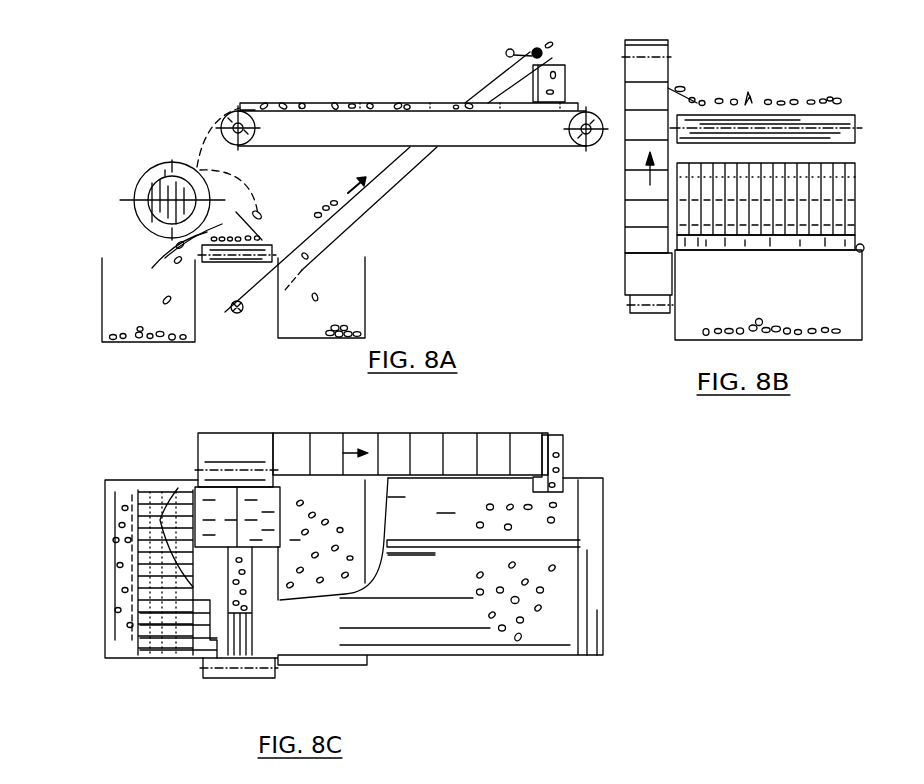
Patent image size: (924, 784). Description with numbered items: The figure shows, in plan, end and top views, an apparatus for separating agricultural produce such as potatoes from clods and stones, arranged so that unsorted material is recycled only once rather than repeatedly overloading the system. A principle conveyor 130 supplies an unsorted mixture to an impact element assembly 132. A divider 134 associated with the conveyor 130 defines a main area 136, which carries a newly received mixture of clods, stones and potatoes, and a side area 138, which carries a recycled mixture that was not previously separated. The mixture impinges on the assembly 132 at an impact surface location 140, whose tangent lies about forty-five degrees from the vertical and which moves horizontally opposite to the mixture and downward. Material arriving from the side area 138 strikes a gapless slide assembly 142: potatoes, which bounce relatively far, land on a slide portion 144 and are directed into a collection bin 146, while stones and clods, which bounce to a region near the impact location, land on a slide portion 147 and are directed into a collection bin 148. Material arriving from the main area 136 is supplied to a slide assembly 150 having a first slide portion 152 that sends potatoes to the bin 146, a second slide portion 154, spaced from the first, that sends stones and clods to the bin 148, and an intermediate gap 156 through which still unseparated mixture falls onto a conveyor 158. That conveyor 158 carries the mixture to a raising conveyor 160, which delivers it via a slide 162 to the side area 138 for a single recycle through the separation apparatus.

In FIG. 8A, the principle conveyor 130 is at (412, 113).
In FIG. 8B, the principle conveyor 130 is at (840, 120).
In FIG. 8C, the principle conveyor 130 is at (525, 645).
In FIG. 8A, the impact element assembly 132 is at (150, 185).
In FIG. 8B, the impact element assembly 132 is at (838, 178).
In FIG. 8C, the impact element assembly 132 is at (142, 490).
In FIG. 8A, the divider 134 is at (456, 106).
In FIG. 8B, the divider 134 is at (752, 103).
In FIG. 8C, the divider 134 is at (580, 547).
In FIG. 8B, the main area 136 is at (830, 99).
In FIG. 8C, the main area 136 is at (597, 584).
In FIG. 8B, the side area 138 is at (728, 103).
In FIG. 8C, the side area 138 is at (590, 516).
In FIG. 8A, the impact surface location 140 is at (197, 160).
In FIG. 8A, the gapless slide assembly 142 is at (235, 215).
In FIG. 8C, the gapless slide assembly 142 is at (215, 493).
In FIG. 8A, the slide portion 144 is at (263, 213).
In FIG. 8C, the slide portion 144 is at (260, 490).
In FIG. 8A, the collection bin 146 is at (345, 277).
In FIG. 8C, the collection bin 146 is at (355, 503).
In FIG. 8A, the slide portion 147 is at (207, 232).
In FIG. 8C, the slide portion 147 is at (227, 497).
In FIG. 8A, the collection bin 148 is at (105, 298).
In FIG. 8B, the collection bin 148 is at (687, 325).
In FIG. 8C, the collection bin 148 is at (172, 540).
In FIG. 8C, the slide assembly 150 is at (207, 605).
In FIG. 8A, the first slide portion 152 is at (237, 215).
In FIG. 8C, the first slide portion 152 is at (268, 592).
In FIG. 8A, the second slide portion 154 is at (160, 262).
In FIG. 8C, the second slide portion 154 is at (195, 585).
In FIG. 8A, the intermediate gap 156 is at (218, 223).
In FIG. 8C, the intermediate gap 156 is at (237, 557).
In FIG. 8A, the conveyor 158 is at (232, 264).
In FIG. 8C, the conveyor 158 is at (237, 678).
In FIG. 8A, the raising conveyor 160 is at (367, 200).
In FIG. 8B, the raising conveyor 160 is at (632, 192).
In FIG. 8C, the raising conveyor 160 is at (452, 447).
In FIG. 8A, the slide 162 is at (558, 78).
In FIG. 8C, the slide 162 is at (563, 443).